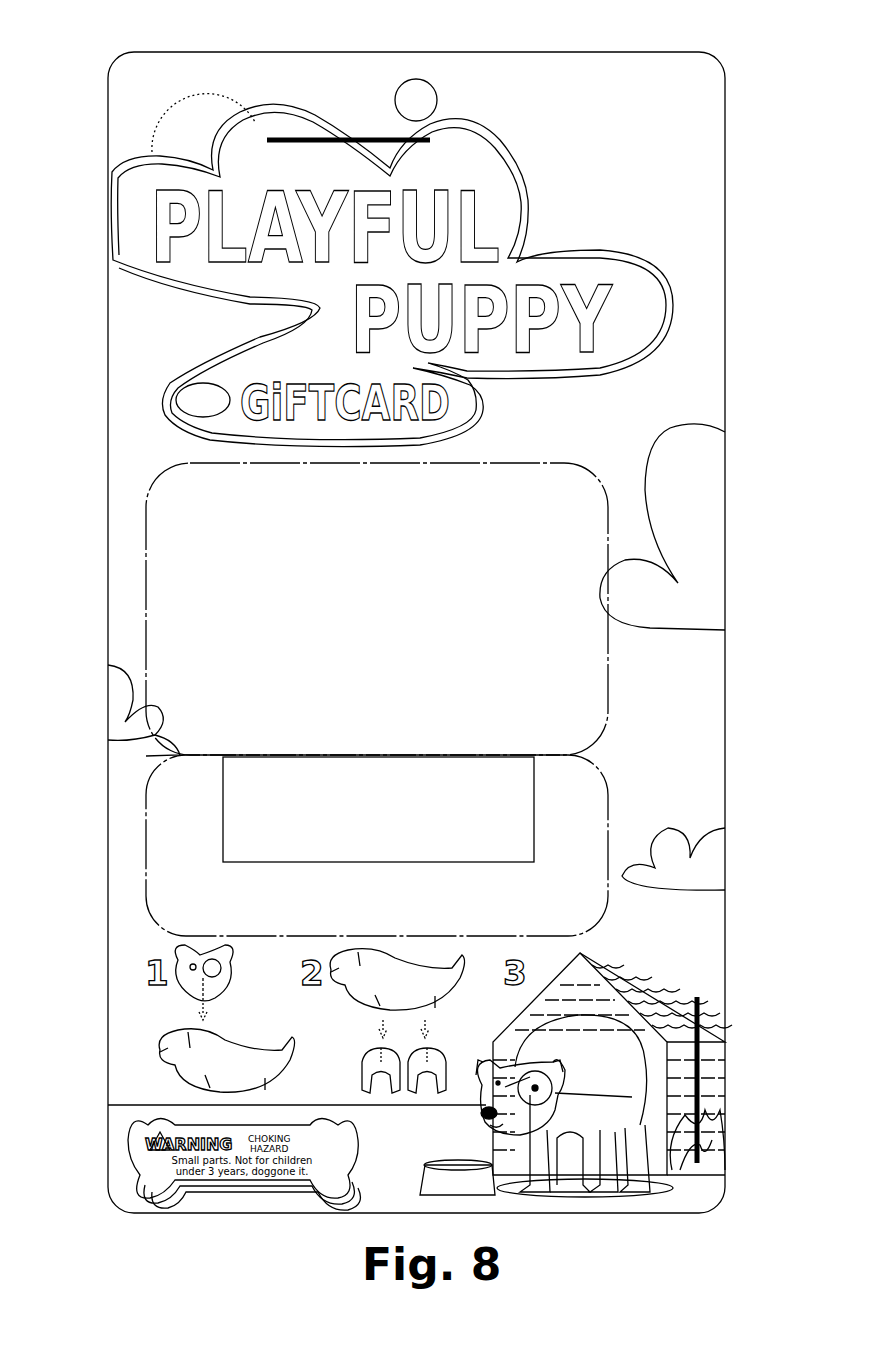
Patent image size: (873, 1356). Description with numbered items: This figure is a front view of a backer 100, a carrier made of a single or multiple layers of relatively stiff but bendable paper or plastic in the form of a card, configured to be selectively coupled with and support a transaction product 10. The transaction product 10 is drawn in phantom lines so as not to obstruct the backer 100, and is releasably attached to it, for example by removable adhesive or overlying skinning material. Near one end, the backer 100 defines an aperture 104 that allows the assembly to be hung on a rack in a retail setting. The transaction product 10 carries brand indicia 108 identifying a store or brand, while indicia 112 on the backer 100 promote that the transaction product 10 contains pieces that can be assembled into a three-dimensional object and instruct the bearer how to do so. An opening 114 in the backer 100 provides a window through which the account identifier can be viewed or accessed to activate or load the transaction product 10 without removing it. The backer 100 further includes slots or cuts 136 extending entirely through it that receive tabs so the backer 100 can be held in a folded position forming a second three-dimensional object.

The backer 100 is at (122, 75).
The transaction product 10 is at (138, 515).
The aperture 104 is at (430, 82).
The brand indicia 108 is at (193, 383).
The indicia 112 is at (700, 238).
The opening 114 is at (257, 861).
The cuts 136 is at (310, 140).